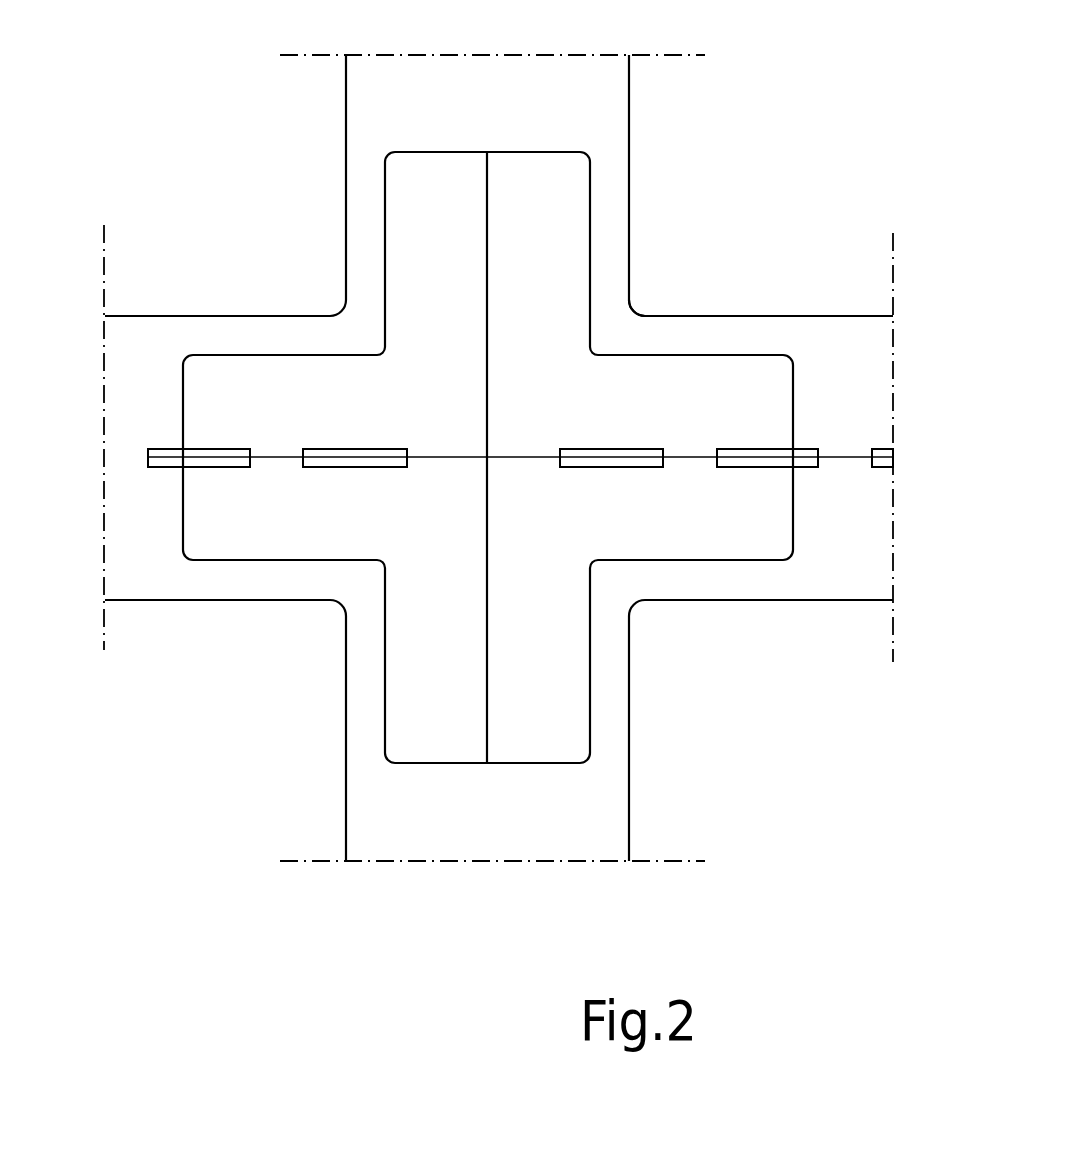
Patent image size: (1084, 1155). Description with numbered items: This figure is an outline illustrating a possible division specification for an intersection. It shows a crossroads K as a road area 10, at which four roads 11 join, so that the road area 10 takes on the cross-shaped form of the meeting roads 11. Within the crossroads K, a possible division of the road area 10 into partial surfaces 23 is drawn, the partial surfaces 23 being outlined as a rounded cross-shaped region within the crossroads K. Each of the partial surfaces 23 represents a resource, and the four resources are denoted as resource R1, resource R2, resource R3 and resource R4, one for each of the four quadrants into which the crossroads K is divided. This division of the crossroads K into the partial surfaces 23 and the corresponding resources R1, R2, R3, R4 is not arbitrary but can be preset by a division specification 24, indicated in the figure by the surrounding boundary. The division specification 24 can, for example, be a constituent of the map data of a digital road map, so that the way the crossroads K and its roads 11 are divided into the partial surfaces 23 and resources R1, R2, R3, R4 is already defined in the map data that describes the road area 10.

The road area 10 is at (499, 458).
The road 11 is at (629, 105).
The partial surface 23 is at (302, 355).
The division specification 24 is at (283, 91).
The crossroads K is at (639, 309).
The resource R1 is at (387, 520).
The resource R2 is at (580, 520).
The resource R3 is at (580, 403).
The resource R4 is at (387, 403).